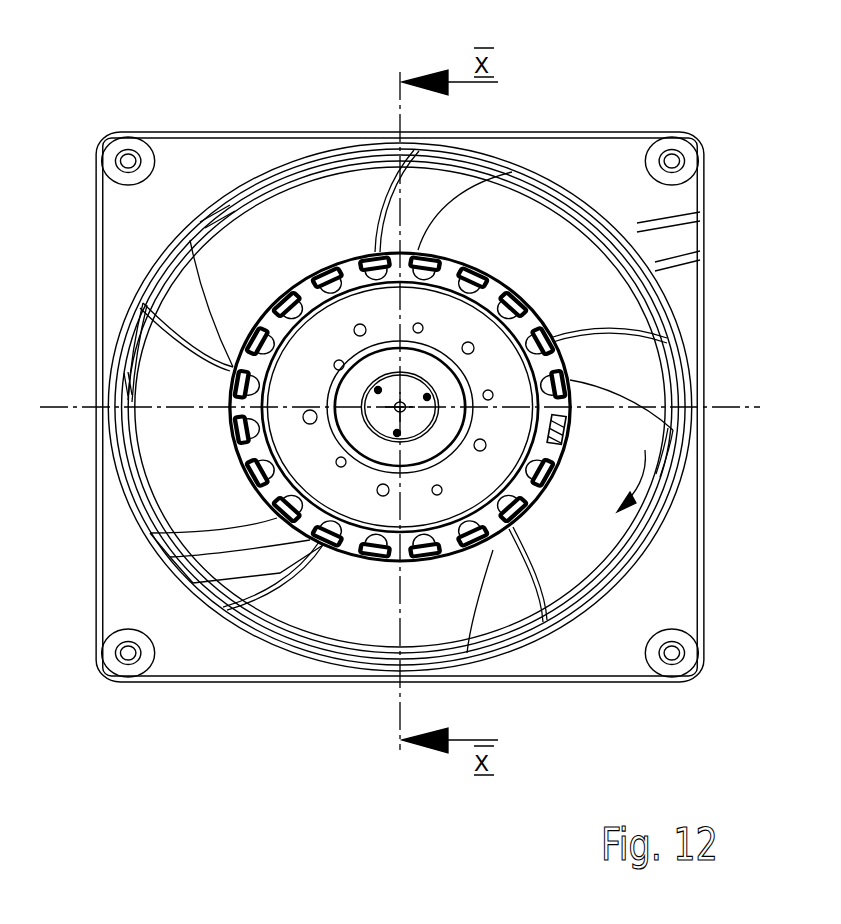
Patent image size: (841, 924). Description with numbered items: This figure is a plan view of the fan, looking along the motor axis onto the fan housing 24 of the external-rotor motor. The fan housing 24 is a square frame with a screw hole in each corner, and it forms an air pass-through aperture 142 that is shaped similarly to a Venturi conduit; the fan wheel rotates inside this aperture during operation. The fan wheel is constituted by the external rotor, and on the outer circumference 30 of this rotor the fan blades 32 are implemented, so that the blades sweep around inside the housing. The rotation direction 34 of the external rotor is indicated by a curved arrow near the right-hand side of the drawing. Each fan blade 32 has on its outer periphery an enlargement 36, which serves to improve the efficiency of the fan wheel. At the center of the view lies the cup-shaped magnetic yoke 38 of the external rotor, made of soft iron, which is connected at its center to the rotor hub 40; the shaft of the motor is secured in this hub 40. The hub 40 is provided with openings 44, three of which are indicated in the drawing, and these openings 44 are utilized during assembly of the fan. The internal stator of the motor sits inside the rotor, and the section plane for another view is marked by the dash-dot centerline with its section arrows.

The fan housing 24 is at (614, 138).
The outer circumference 30 is at (510, 280).
The fan blades 32 is at (323, 226).
The rotation direction 34 is at (645, 450).
The enlargement 36 is at (217, 212).
The magnetic yoke 38 is at (462, 334).
The rotor hub 40 is at (357, 437).
The openings 44 is at (378, 390).
The air pass-through aperture 142 is at (455, 170).